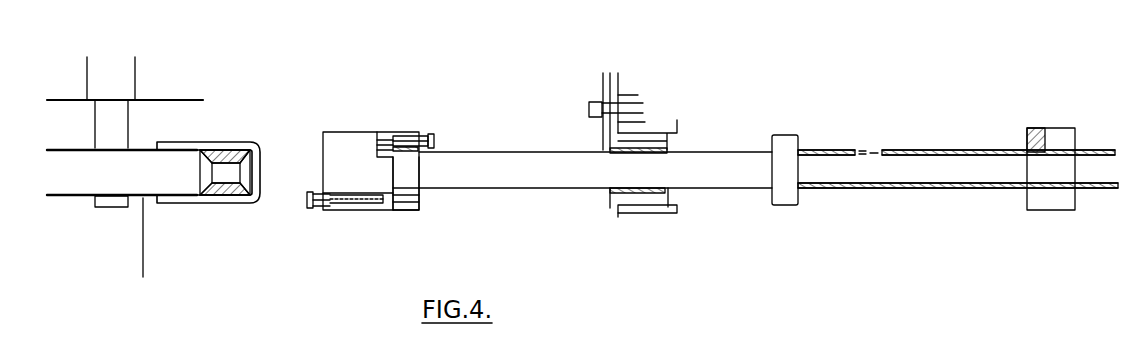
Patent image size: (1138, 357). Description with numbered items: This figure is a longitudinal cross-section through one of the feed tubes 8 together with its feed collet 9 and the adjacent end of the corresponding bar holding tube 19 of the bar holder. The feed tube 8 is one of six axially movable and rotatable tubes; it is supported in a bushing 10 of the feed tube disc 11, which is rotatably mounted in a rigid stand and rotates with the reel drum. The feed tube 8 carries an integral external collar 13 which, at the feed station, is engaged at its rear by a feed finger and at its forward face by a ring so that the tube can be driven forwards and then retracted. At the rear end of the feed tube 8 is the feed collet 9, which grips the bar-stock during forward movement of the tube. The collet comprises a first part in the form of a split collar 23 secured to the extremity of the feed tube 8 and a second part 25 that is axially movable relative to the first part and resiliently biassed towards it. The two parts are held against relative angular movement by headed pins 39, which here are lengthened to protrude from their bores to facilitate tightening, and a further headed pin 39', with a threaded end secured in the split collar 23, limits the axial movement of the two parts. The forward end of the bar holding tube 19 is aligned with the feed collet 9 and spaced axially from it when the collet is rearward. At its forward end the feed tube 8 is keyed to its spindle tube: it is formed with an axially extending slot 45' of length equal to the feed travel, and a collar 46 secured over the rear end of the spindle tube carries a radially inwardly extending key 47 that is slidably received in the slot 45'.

The bar holding tube 19 is at (140, 148).
The second part 25 is at (359, 130).
The headed pin 39' is at (428, 121).
The headed pin 39 is at (304, 224).
The feed collet 9 is at (357, 212).
The split collar 23 is at (413, 210).
The feed tube 8 is at (720, 152).
The feed tube disc 11 is at (588, 123).
The bushing 10 is at (610, 190).
The external collar 13 is at (782, 145).
The axially extending slot 45' is at (958, 149).
The key 47 is at (1027, 135).
The collar 46 is at (1066, 128).